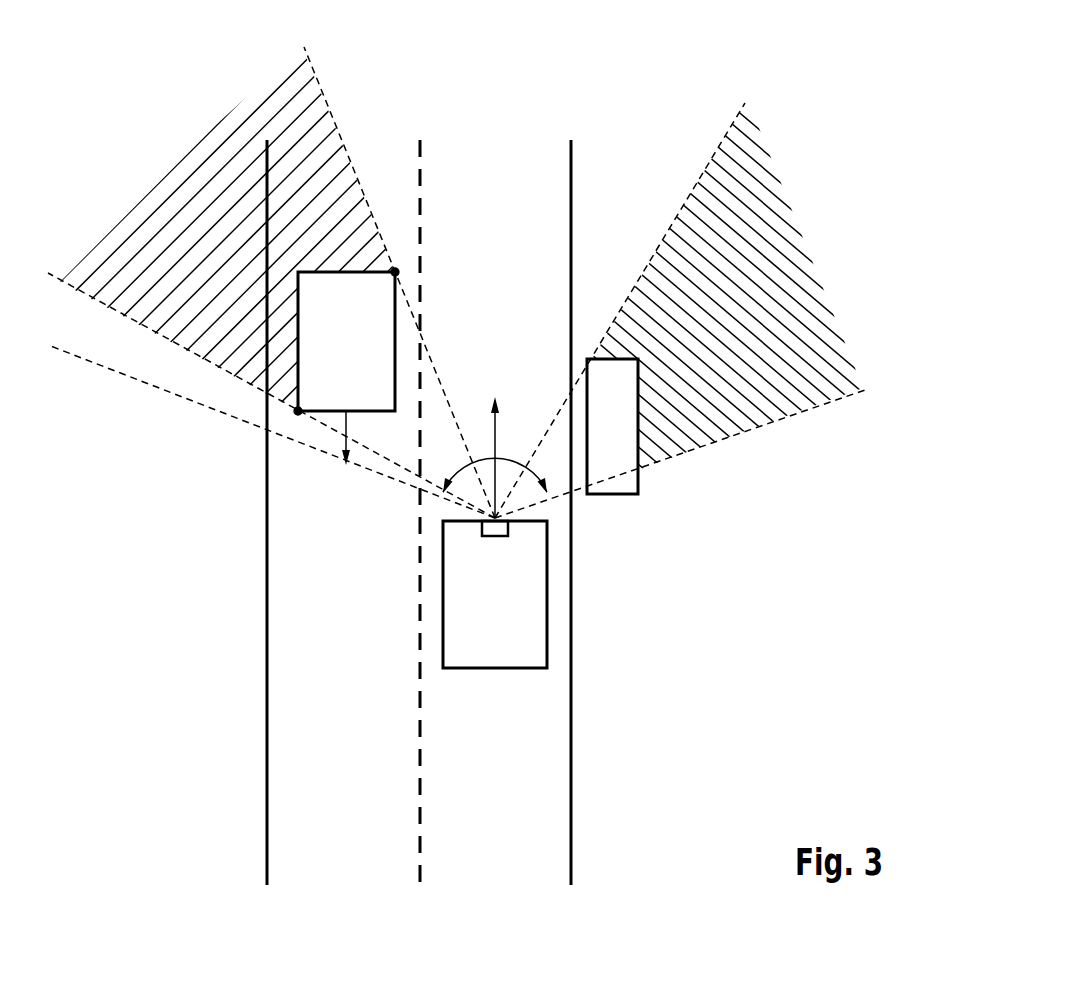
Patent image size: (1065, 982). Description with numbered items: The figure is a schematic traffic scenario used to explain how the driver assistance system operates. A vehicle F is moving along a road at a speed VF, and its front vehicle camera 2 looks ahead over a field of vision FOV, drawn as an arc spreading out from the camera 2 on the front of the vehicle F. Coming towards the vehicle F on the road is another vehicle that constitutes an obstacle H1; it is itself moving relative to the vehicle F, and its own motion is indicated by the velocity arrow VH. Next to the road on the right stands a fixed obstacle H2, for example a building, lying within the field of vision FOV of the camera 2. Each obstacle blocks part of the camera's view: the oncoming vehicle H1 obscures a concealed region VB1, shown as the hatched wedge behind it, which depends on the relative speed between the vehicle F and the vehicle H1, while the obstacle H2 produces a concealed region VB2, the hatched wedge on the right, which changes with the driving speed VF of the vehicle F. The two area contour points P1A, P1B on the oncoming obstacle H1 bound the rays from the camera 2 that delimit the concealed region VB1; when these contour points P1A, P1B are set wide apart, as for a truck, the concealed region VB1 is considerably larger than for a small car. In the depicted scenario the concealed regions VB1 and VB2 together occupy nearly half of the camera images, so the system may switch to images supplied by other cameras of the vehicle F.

The concealed region VB1 is at (175, 202).
The concealed region VB2 is at (775, 240).
The obstacle H1 is at (397, 312).
The obstacle H2 is at (638, 490).
The area contour point P1A is at (395, 272).
The area contour point P1B is at (298, 411).
The velocity of obstacle H1 VH is at (342, 421).
The speed VF is at (492, 433).
The field of vision FOV is at (510, 462).
The vehicle F is at (490, 668).
The front vehicle camera 2 is at (500, 528).